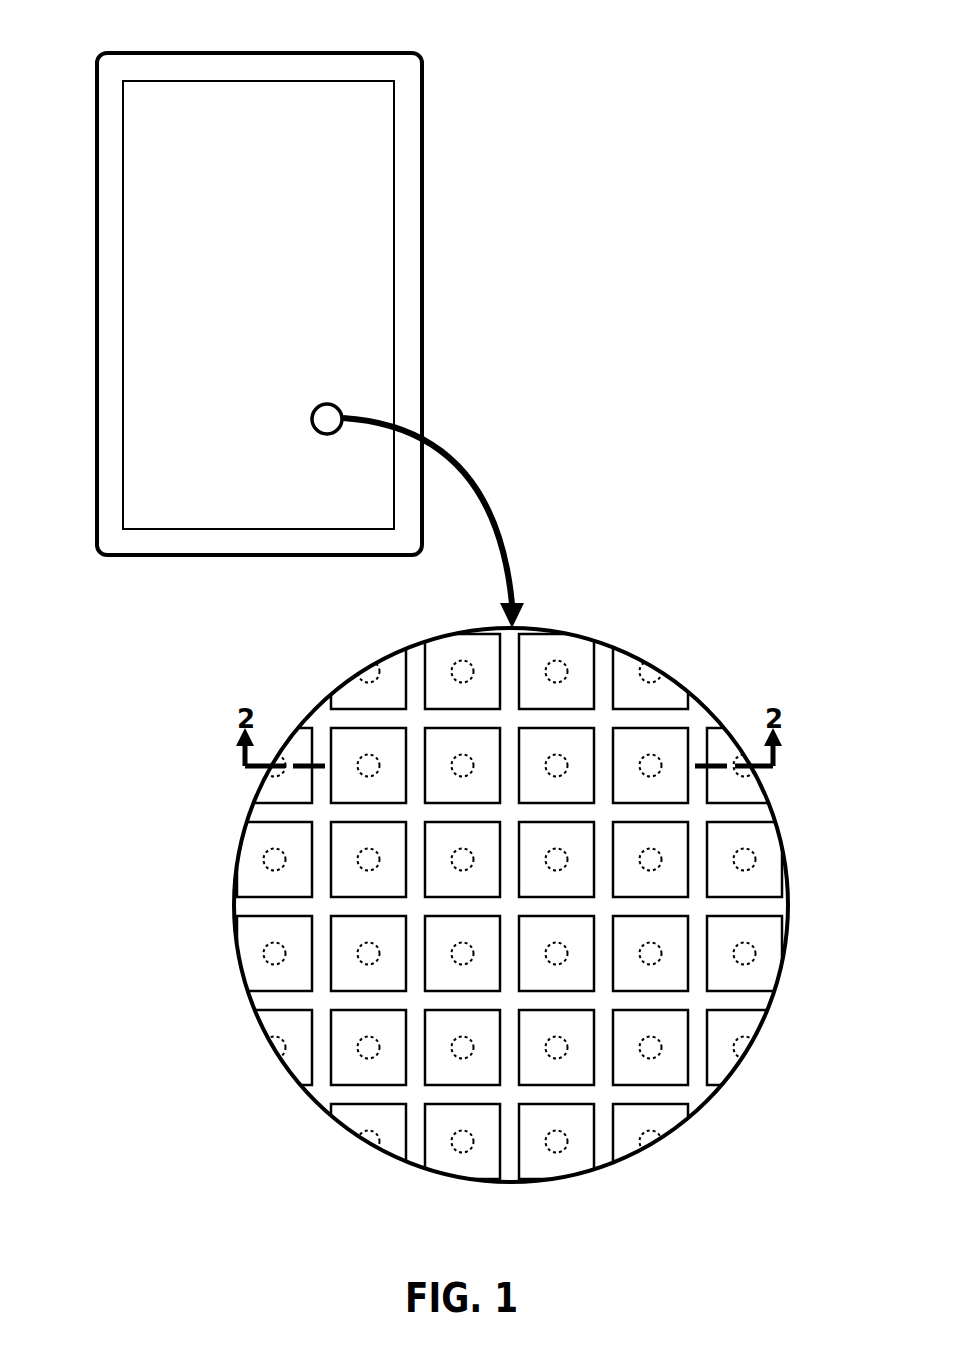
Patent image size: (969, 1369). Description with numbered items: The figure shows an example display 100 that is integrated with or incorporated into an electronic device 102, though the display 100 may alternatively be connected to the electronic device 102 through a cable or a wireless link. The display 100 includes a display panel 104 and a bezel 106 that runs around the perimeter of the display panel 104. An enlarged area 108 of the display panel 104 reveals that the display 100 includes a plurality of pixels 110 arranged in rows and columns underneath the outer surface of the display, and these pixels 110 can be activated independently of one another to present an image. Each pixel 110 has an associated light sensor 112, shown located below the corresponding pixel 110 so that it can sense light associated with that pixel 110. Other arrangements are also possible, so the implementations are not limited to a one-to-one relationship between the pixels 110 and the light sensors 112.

The display 100 is at (114, 66).
The electronic device 102 is at (421, 79).
The display panel 104 is at (394, 183).
The bezel 106 is at (124, 234).
The enlarged area 108 is at (313, 410).
The pixel 110 is at (688, 726).
The light sensor 112 is at (758, 855).